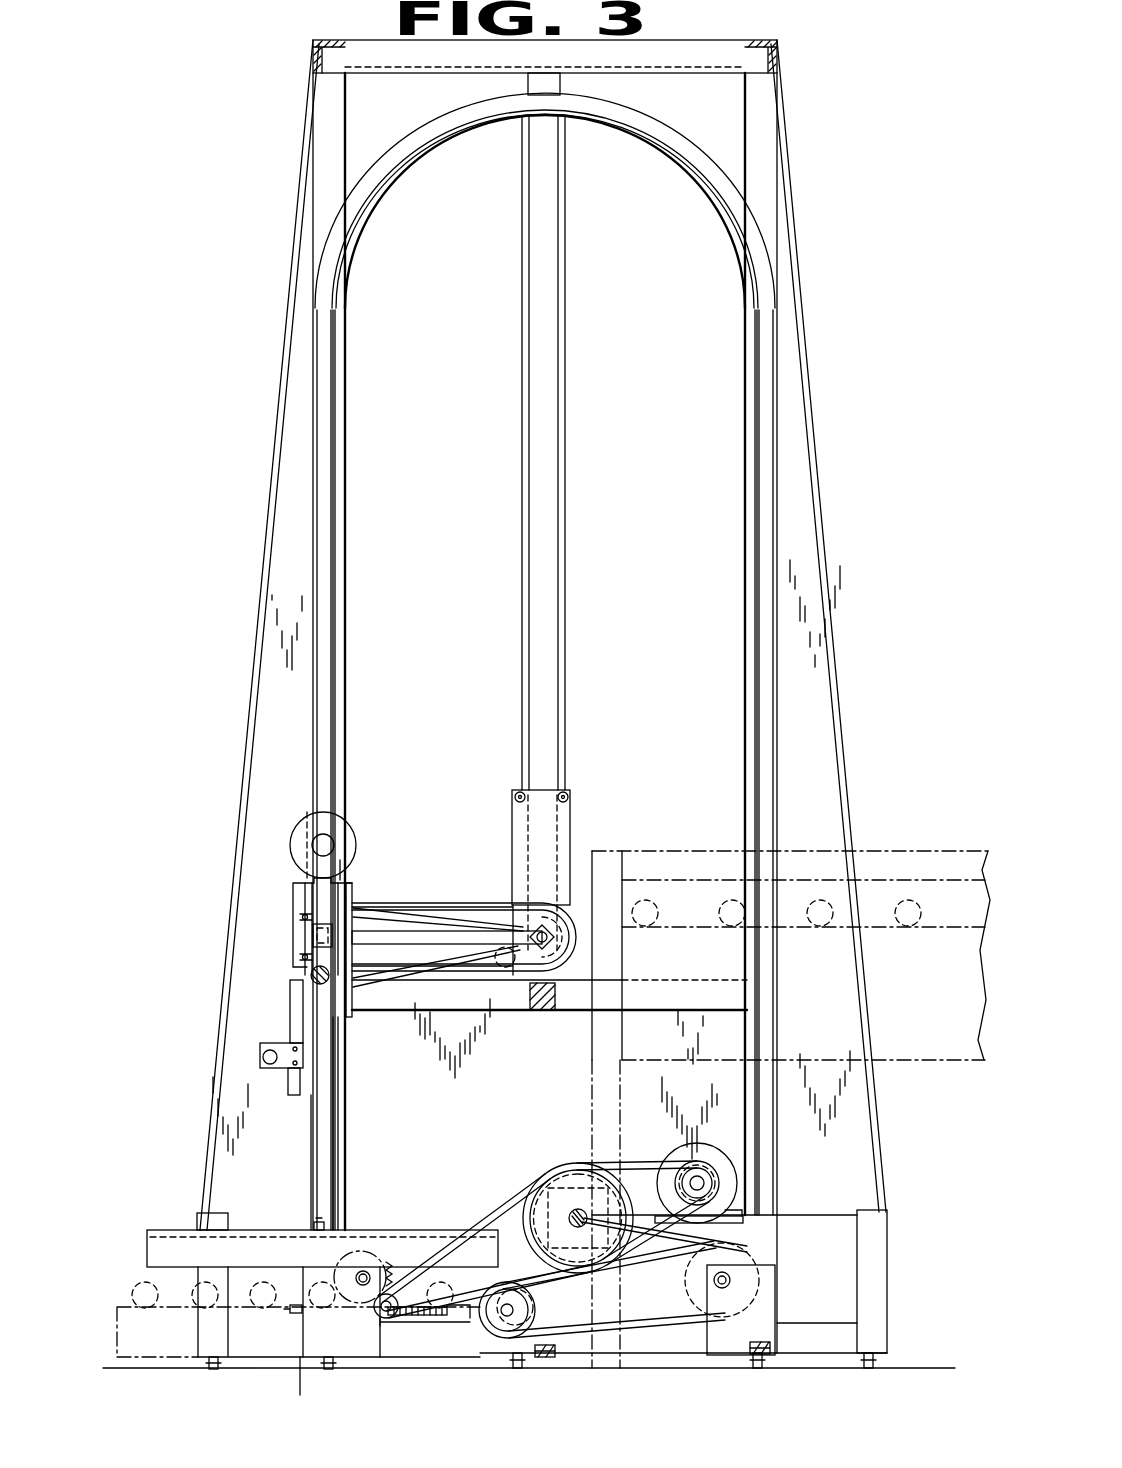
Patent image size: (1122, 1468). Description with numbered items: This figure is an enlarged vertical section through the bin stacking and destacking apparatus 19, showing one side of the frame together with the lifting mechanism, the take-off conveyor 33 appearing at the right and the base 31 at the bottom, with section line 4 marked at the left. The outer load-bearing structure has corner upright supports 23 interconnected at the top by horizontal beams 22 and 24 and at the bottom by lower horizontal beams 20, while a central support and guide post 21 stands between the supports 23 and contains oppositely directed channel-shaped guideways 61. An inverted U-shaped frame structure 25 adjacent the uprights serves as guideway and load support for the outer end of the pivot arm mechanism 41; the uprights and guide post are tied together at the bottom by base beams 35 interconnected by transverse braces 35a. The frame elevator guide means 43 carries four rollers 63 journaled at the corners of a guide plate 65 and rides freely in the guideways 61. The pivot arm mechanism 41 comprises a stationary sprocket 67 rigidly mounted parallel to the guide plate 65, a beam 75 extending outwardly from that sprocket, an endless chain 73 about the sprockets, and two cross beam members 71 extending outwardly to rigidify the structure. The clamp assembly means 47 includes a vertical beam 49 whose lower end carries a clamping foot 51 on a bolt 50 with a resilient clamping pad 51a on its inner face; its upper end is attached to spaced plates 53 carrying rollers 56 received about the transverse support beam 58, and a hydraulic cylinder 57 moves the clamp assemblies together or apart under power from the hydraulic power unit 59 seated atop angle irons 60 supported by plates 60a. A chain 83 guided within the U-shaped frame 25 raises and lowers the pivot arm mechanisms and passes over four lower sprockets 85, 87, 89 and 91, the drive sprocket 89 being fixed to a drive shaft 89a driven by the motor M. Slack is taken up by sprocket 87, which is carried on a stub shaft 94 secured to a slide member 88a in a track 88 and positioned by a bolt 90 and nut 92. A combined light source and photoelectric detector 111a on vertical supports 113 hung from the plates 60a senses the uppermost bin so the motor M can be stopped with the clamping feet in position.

The apparatus 19 is at (822, 176).
The horizontal beam 20 is at (634, 982).
The central support and guide post 21 is at (546, 370).
The horizontal beam 22 is at (312, 58).
The upright support 23 is at (325, 117).
The horizontal beam 24 is at (703, 74).
The inverted U-shaped frame structure 25 is at (456, 114).
The base 31 is at (130, 1288).
The take-off conveyor 33 is at (868, 850).
The base beam 35 is at (888, 1292).
The transverse brace 35a is at (546, 1358).
The pivot arm mechanism 41 is at (448, 902).
The frame elevator guide means 43 is at (578, 816).
The clamp assembly means 47 is at (308, 1160).
The vertical beam 49 is at (311, 1132).
The bolt 50 is at (316, 1222).
The clamping foot 51 is at (167, 1229).
The resilient clamping pad 51a is at (400, 1229).
The spaced plates 53 is at (355, 894).
The roller 56 is at (300, 918).
The hydraulic cylinder 57 is at (318, 984).
The support beam 58 is at (312, 940).
The hydraulic power unit 59 is at (350, 822).
The angle iron 60 is at (293, 884).
The plate 60a is at (353, 1018).
The channel-shaped guideway 61 is at (521, 292).
The roller 63 is at (512, 792).
The guide plate 65 is at (572, 830).
The stationary sprocket 67 is at (556, 940).
The cross beam member 71 is at (432, 900).
The endless chain 73 is at (494, 902).
The beam 75 is at (504, 964).
The chain 83 is at (346, 582).
The sprocket 85 is at (690, 1268).
The sprocket 87 is at (522, 1302).
The track 88 is at (392, 1323).
The slide member 88a is at (417, 1330).
The sprocket 89 is at (552, 1206).
The drive shaft 89a is at (627, 1244).
The bolt 90 is at (376, 1312).
The sprocket 91 is at (392, 1270).
The nut 92 is at (296, 1316).
The stub shaft 94 is at (456, 1320).
The combined light source and photoelectric detector 111a is at (266, 1066).
The vertical support 113 is at (289, 1025).
The motor M is at (690, 1148).
The section line 4 is at (300, 820).